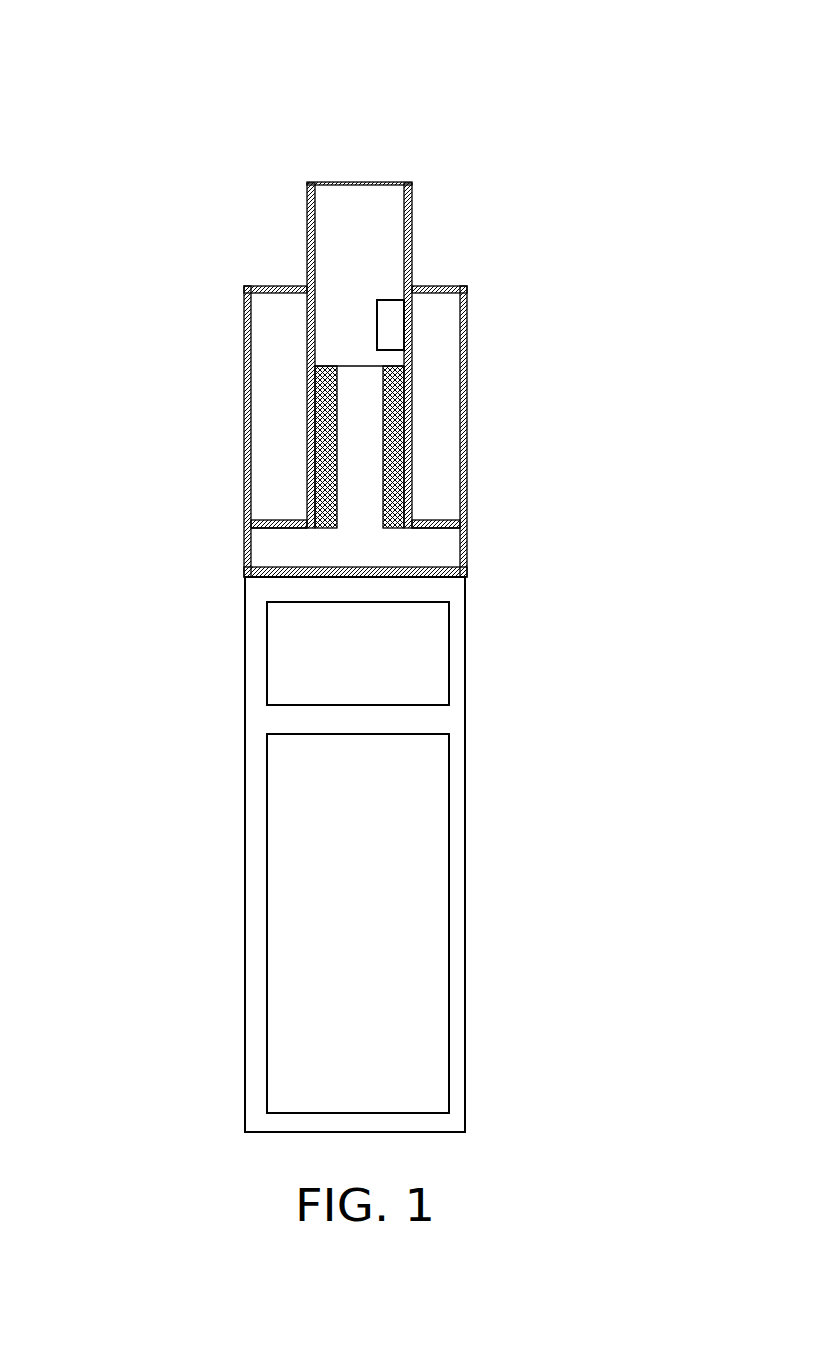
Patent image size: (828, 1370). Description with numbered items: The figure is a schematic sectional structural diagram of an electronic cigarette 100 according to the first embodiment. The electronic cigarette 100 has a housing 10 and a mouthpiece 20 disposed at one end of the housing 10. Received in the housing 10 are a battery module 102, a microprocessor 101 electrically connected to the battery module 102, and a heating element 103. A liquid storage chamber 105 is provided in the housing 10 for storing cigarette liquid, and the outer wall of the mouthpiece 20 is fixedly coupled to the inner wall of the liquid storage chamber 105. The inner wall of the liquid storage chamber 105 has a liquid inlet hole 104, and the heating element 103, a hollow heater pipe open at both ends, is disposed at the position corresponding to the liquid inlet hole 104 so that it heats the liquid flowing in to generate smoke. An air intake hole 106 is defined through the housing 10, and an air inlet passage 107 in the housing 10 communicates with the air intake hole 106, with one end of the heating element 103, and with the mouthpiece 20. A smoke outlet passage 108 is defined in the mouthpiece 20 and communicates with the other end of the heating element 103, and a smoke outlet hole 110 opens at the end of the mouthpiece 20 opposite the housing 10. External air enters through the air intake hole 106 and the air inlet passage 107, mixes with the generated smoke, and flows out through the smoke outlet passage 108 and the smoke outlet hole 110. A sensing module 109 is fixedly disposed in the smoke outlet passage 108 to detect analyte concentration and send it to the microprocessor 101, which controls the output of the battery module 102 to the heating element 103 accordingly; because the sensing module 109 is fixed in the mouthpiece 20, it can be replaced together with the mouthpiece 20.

The electronic cigarette 100 is at (352, 113).
The housing 10 is at (265, 679).
The mouthpiece 20 is at (305, 238).
The microprocessor 101 is at (412, 662).
The battery module 102 is at (410, 805).
The heating element 103 is at (312, 368).
The liquid inlet hole 104 is at (305, 483).
The liquid storage chamber 105 is at (437, 440).
The air intake hole 106 is at (467, 543).
The air inlet passage 107 is at (408, 555).
The smoke outlet passage 108 is at (383, 265).
The sensing module 109 is at (393, 337).
The smoke outlet hole 110 is at (383, 197).